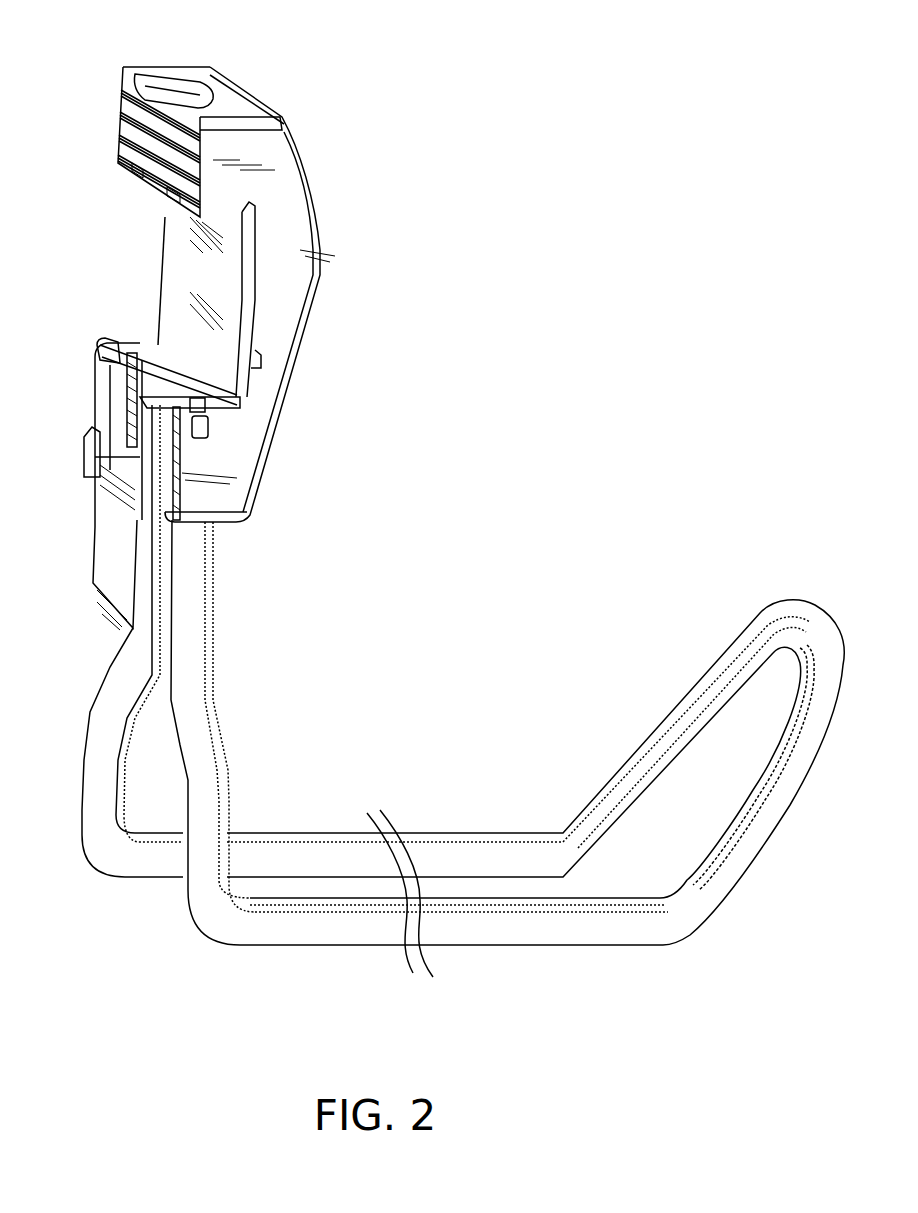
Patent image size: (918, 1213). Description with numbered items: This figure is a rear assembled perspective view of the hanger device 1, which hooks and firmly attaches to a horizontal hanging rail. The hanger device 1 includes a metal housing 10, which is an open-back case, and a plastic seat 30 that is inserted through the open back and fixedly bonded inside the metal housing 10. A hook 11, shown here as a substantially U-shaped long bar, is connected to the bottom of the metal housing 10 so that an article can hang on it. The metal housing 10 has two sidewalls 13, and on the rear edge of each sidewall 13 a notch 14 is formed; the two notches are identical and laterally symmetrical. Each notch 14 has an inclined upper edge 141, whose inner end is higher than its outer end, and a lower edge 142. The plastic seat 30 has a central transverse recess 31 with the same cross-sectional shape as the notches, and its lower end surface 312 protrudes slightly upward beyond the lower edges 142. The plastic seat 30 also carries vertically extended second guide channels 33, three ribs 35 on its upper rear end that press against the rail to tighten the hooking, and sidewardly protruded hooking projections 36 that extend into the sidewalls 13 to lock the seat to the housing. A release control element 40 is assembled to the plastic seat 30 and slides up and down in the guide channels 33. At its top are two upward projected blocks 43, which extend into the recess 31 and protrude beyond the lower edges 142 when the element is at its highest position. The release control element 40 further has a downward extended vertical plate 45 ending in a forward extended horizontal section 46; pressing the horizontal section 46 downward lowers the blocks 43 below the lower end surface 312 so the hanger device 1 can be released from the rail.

The hanger device 1 is at (290, 96).
The metal housing 10 is at (317, 196).
The hook 11 is at (275, 838).
The sidewall 13 is at (258, 252).
The notch 14 is at (238, 327).
The inclined upper edge 141 is at (205, 248).
The lower edge 142 is at (237, 395).
The plastic seat 30 is at (170, 100).
The recess 31 is at (167, 267).
The lower end surface 312 is at (153, 343).
The second guide channel 33 is at (117, 353).
The rib 35 is at (133, 67).
The hooking projection 36 is at (207, 447).
The release control element 40 is at (92, 447).
The upward projected block 43 is at (252, 368).
The vertical plate 45 is at (113, 540).
The horizontal section 46 is at (150, 627).